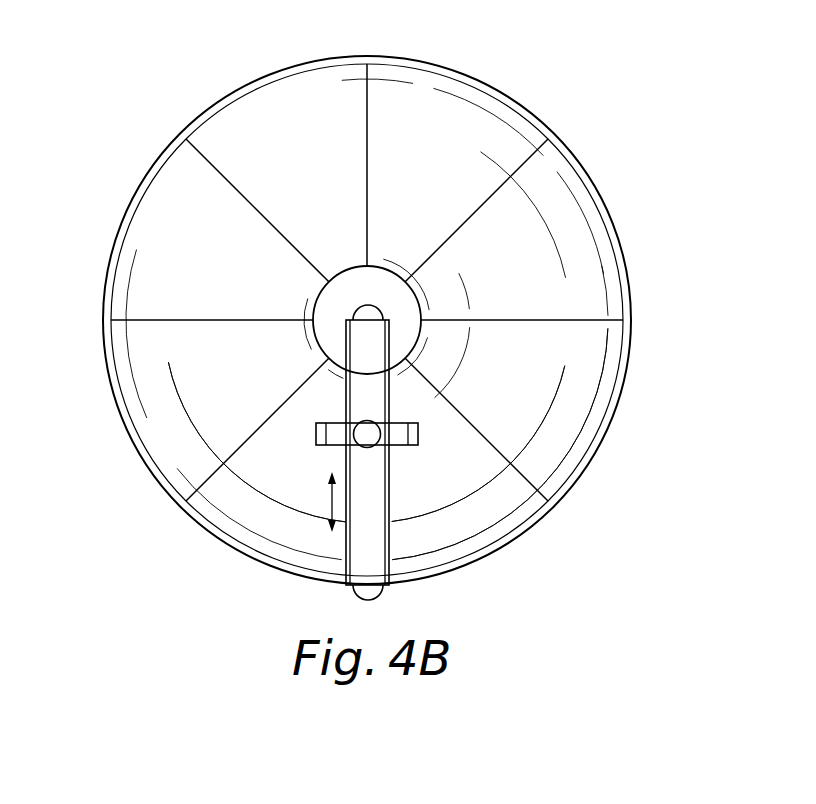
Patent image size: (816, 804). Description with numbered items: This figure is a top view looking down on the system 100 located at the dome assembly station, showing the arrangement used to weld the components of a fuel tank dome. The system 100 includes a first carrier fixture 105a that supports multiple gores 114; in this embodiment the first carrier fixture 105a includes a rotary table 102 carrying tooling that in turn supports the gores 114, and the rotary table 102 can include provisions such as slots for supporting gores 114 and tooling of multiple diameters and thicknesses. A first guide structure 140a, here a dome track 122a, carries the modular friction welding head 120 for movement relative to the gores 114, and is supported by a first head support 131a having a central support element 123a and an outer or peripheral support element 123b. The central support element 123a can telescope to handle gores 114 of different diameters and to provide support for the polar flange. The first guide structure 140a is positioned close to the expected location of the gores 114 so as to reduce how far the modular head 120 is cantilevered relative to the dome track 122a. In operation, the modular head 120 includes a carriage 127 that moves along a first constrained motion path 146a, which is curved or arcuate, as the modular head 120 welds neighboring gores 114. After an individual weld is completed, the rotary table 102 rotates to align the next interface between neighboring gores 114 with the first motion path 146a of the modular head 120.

The system 100 is at (214, 553).
The rotary table 102 is at (121, 417).
The first carrier fixture 105a is at (645, 343).
The gores 114 is at (452, 118).
The modular friction welding head 120 is at (322, 413).
The dome track 122a is at (390, 503).
The central support element 123a is at (362, 306).
The peripheral support element 123b is at (382, 601).
The carriage 127 is at (390, 420).
The first head support 131a is at (328, 592).
The first guide structure 140a is at (436, 542).
The first constrained motion path 146a is at (346, 500).